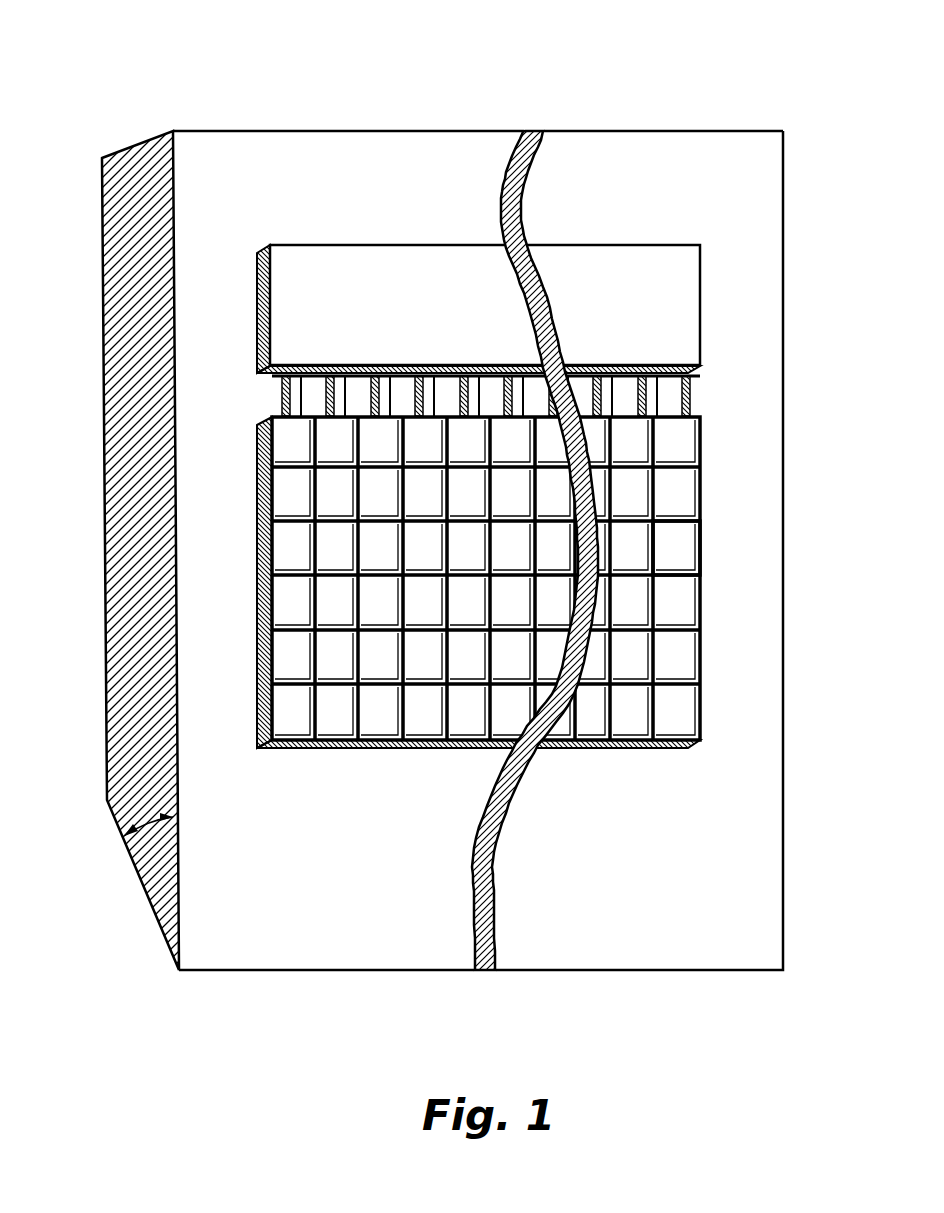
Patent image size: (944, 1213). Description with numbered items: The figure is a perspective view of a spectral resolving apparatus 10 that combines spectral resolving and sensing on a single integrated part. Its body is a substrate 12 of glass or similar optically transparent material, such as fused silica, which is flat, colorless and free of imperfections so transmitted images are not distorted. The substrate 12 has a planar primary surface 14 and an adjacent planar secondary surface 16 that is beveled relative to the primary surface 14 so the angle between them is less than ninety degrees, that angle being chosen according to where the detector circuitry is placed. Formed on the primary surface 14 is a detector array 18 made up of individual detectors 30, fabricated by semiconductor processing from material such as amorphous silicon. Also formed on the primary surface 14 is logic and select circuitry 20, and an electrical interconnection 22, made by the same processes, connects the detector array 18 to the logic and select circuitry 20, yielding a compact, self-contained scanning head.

The spectral resolving apparatus 10 is at (149, 73).
The substrate 12 is at (445, 131).
The primary surface 14 is at (724, 188).
The secondary surface 16 is at (150, 917).
The detector array 18 is at (703, 602).
The logic and select circuitry 20 is at (680, 294).
The electrical interconnection 22 is at (240, 365).
The individual detector 30 is at (680, 552).